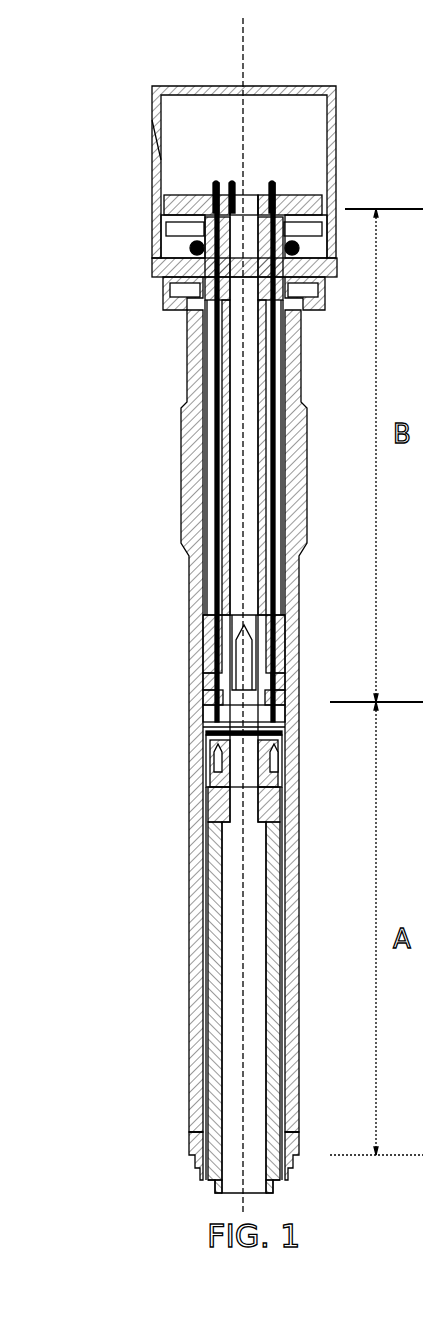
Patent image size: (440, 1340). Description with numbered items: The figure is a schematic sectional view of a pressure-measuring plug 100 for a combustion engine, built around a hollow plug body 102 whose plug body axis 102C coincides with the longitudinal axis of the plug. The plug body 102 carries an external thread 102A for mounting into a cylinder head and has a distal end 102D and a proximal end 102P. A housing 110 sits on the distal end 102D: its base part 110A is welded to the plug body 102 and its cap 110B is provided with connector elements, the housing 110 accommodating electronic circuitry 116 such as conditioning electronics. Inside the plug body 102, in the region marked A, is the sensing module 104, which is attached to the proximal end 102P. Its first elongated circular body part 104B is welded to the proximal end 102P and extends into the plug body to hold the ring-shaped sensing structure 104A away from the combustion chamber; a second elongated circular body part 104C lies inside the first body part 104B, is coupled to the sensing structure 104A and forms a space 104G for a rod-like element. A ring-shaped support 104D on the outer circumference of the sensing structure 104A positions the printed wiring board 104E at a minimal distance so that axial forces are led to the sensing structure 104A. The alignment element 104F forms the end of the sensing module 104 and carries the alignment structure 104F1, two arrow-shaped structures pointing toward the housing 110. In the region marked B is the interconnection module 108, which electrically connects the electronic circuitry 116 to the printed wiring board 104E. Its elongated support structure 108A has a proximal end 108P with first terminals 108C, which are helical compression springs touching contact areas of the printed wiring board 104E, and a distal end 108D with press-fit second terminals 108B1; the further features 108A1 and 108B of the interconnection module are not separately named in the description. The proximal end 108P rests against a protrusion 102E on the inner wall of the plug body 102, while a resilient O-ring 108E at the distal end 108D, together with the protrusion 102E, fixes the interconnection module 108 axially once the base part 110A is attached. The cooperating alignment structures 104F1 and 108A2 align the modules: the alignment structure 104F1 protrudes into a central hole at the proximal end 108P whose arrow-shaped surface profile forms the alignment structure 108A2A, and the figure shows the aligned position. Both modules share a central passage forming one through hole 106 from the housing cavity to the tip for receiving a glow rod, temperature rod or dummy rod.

The pressure-measuring plug 100 is at (103, 197).
The hollow plug body 102 is at (190, 625).
The external thread 102A is at (183, 477).
The plug body axis 102C is at (238, 27).
The distal end of hollow plug body 102D is at (175, 302).
The protrusion 102E is at (200, 686).
The proximal end of hollow plug body 102P is at (192, 1116).
The sensing module 104 is at (230, 920).
The ring-shaped sensing structure 104A is at (192, 762).
The first elongated circular body part 104B is at (192, 1148).
The second elongated circular body part 104C is at (207, 1032).
The ring-shaped support 104D is at (193, 744).
The printed wiring board 104E is at (284, 728).
The alignment element 104F is at (190, 722).
The alignment structure of alignment element 104F1 is at (252, 659).
The space for receiving rod-like element 104G is at (229, 1184).
The through hole 106 is at (253, 197).
The interconnection module 108 is at (233, 410).
The elongated support structure 108A is at (217, 513).
The inner tube 108A1 is at (215, 372).
The alignment structure of elongated support structure 108A2 is at (285, 636).
The alignment structure of interconnection module 108A2A is at (278, 612).
The second rod 108B is at (275, 505).
The second terminals 108B1 is at (278, 193).
The first terminals 108C is at (207, 700).
The distal end of interconnection module 108D is at (165, 228).
The resilient O-ring 108E is at (175, 248).
The proximal end of interconnection module 108P is at (180, 646).
The housing 110 is at (143, 97).
The base part of housing 110A is at (155, 270).
The cap 110B is at (157, 140).
The electronic circuitry 116 is at (167, 205).